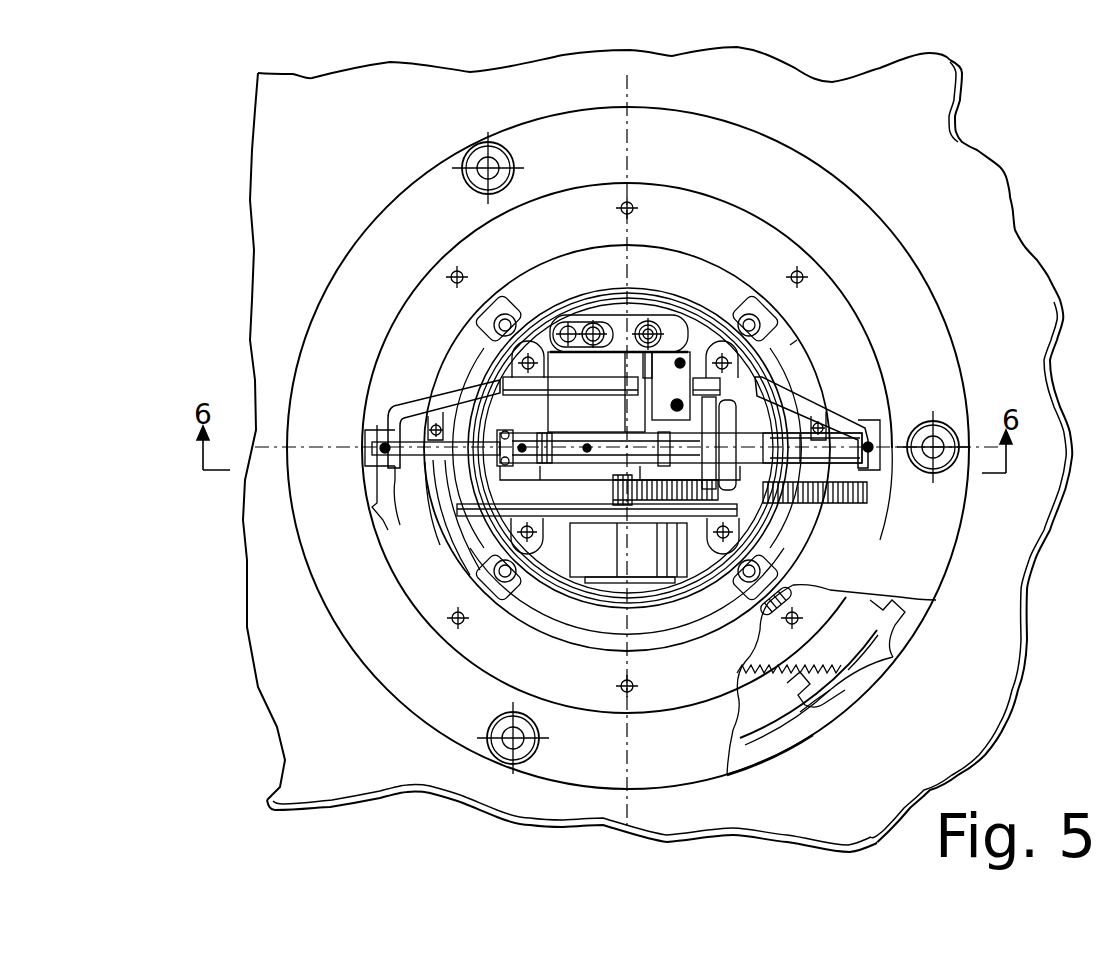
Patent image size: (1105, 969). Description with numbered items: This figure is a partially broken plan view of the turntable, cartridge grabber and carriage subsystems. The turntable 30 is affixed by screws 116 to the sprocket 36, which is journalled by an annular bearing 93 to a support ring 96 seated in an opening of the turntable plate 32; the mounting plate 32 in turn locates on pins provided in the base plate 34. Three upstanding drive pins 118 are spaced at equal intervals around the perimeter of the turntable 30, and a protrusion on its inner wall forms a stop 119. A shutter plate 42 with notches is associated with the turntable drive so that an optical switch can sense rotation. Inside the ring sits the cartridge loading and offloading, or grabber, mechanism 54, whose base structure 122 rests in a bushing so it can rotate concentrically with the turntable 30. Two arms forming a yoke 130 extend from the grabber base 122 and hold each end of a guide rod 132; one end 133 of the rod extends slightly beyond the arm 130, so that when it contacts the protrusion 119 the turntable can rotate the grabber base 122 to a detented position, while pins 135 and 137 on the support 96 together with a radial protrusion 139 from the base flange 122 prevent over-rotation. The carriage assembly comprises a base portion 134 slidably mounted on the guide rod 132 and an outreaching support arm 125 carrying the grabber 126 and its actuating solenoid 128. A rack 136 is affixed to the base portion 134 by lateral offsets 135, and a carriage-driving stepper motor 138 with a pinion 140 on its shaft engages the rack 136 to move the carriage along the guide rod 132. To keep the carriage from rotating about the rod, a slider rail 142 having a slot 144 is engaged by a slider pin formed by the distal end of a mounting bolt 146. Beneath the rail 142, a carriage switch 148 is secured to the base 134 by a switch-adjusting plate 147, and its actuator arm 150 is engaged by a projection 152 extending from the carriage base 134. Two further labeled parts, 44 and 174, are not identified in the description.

The turntable 30 is at (885, 290).
The turntable plate 32 is at (976, 190).
The base plate 34 is at (955, 110).
The sprocket 36 is at (737, 720).
The shutter plate 42 is at (770, 713).
The band bracket 44 is at (893, 657).
The cartridge load/offload mechanism 54 is at (574, 292).
The annular bearing 93 is at (752, 645).
The support ring 96 is at (462, 344).
The screws 116 is at (798, 270).
The drive pins 118 is at (468, 178).
The stop 119 is at (372, 490).
The base structure 122 is at (786, 540).
The support arm 125 is at (543, 467).
The grabber 126 is at (496, 432).
The actuating solenoid 128 is at (798, 374).
The yoke 130 is at (393, 408).
The guide rod 132 is at (418, 493).
The guide rod end 133 is at (370, 438).
The base portion 134 is at (878, 432).
The lateral offsets 135 is at (665, 505).
The rack 136 is at (862, 490).
The pin 137 is at (436, 412).
The carriage driving stepper motor 138 is at (553, 595).
The radial protrusion 139 is at (450, 532).
The pinion 140 is at (575, 572).
The slider rail 142 is at (598, 397).
The slot 144 is at (553, 382).
The mounting bolt 146 is at (790, 346).
The switch-adjusting plate 147 is at (660, 318).
The carriage switch 148 is at (667, 362).
The actuator arm 150 is at (648, 399).
The projection 152 is at (645, 418).
The collar 174 is at (565, 458).